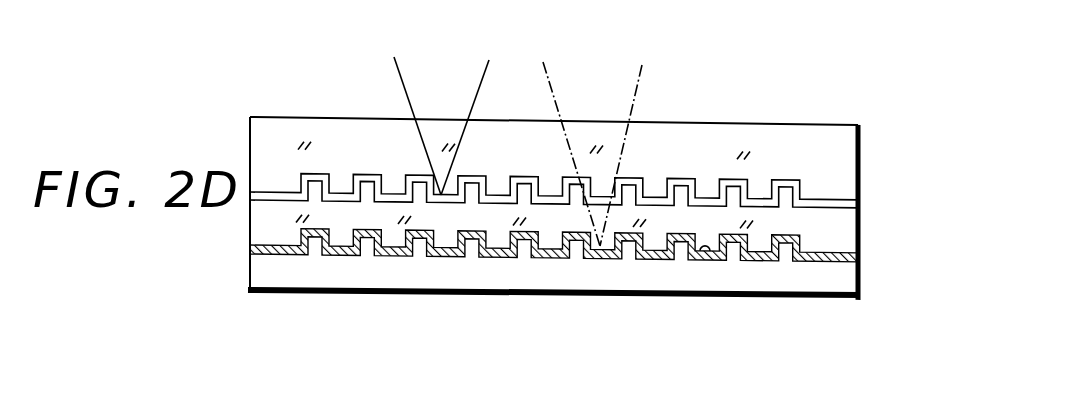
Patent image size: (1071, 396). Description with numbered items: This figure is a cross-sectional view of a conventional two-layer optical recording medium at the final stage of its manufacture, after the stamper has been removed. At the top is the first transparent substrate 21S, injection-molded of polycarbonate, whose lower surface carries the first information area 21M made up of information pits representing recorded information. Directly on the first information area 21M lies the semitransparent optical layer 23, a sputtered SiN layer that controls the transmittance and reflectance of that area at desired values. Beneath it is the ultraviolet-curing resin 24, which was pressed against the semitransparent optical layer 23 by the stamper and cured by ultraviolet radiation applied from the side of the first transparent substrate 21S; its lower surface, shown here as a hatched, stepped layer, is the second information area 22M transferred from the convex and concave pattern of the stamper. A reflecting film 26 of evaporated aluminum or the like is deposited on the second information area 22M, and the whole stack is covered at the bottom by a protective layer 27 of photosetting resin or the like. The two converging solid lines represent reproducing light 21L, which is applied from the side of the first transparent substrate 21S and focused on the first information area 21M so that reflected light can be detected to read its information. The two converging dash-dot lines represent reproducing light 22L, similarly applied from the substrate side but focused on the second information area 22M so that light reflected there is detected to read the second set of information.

The reproducing light 21L is at (400, 72).
The reproducing light 22L is at (550, 80).
The first information area 21M is at (760, 200).
The second information area 22M is at (716, 247).
The first transparent substrate 21S is at (818, 138).
The semitransparent optical layer 23 is at (834, 193).
The ultraviolet-curing resin 24 is at (830, 228).
The reflecting film 26 is at (660, 262).
The protective layer 27 is at (755, 282).